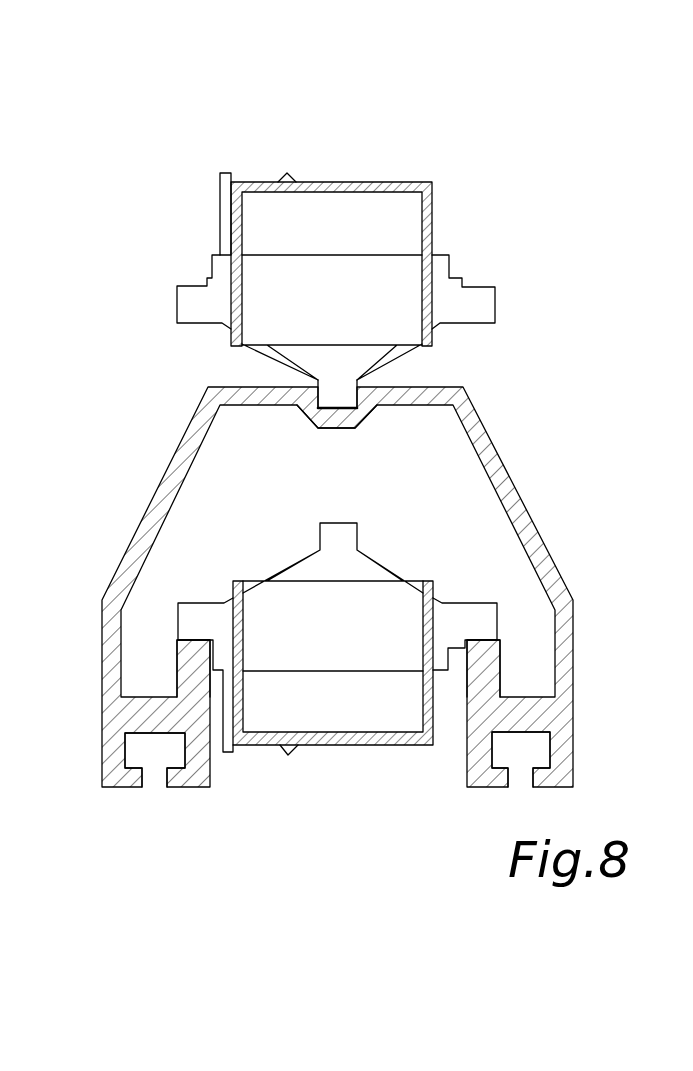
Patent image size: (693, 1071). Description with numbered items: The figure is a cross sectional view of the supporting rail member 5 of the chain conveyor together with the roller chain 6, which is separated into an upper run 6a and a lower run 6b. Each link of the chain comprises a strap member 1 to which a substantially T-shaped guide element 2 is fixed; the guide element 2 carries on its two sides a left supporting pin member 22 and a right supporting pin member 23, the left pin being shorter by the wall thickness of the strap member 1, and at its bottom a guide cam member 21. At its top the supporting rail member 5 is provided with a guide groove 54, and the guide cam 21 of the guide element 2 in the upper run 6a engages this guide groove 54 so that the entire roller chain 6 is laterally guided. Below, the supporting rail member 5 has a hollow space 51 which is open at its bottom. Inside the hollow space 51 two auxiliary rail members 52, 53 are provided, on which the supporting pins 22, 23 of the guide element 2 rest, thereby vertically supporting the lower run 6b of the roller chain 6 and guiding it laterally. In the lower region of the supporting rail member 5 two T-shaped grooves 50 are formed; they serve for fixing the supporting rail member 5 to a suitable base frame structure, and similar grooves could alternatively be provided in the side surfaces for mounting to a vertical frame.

The strap member 1 is at (359, 137).
The guide element 2 is at (337, 288).
The supporting rail member 5 is at (522, 502).
The roller chain 6 is at (454, 158).
The upper run 6a is at (193, 220).
The lower run 6b is at (382, 782).
The guide cam member 21 is at (338, 392).
The left supporting pin member 22 is at (200, 613).
The right supporting pin member 23 is at (480, 612).
The T-shaped grooves 50 is at (152, 755).
The hollow space 51 is at (282, 527).
The auxiliary rail member 52 is at (503, 680).
The auxiliary rail member 53 is at (175, 678).
The guide groove 54 is at (386, 437).